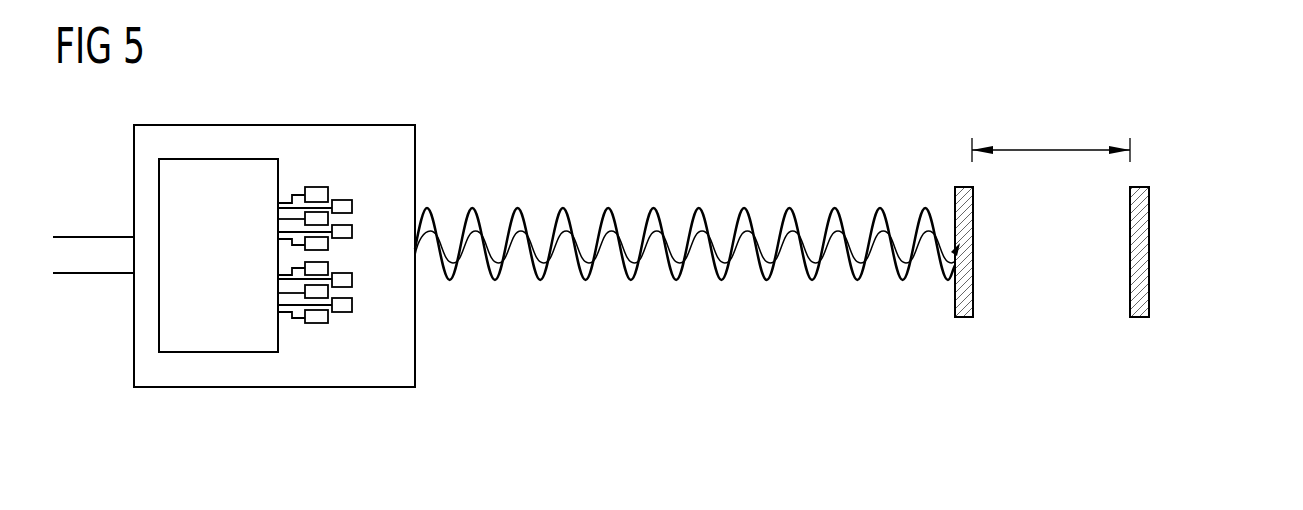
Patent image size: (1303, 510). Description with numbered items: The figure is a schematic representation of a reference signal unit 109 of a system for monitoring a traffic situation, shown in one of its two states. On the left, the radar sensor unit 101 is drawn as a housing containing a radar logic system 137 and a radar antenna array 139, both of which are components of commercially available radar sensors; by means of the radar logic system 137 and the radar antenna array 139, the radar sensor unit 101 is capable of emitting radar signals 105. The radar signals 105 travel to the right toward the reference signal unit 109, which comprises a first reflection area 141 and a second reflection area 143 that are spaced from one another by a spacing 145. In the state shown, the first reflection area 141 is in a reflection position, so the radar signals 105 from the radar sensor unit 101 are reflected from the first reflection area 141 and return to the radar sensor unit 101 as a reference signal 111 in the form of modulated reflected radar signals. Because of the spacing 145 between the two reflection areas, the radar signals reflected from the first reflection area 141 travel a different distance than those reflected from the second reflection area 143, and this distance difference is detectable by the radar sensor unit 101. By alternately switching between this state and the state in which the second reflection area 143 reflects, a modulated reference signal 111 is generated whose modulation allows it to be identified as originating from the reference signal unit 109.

The radar sensor unit 101 is at (275, 125).
The radar signals 105 is at (563, 208).
The reference signal unit 109 is at (1208, 235).
The reference signal 111 is at (765, 247).
The radar logic system 137 is at (280, 176).
The radar antenna array 139 is at (343, 340).
The first reflection area 141 is at (963, 318).
The second reflection area 143 is at (1138, 318).
The spacing 145 is at (1050, 150).